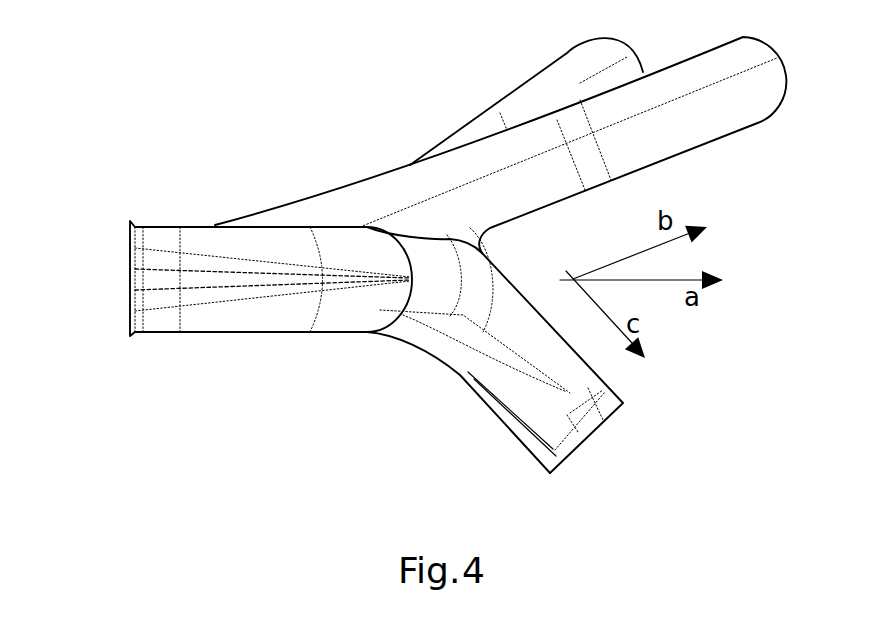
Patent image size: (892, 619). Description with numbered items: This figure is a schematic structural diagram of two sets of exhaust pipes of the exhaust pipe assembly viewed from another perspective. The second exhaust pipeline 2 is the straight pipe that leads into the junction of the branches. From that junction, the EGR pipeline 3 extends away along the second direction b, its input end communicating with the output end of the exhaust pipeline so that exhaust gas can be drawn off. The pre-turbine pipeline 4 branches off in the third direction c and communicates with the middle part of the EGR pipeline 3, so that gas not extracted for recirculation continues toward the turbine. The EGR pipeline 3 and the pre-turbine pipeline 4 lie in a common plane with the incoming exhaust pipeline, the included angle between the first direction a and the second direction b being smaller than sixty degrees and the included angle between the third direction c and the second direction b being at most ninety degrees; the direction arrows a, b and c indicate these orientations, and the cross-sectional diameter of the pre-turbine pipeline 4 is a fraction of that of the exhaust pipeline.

The second exhaust pipeline 2 is at (267, 265).
The EGR pipeline 3 is at (460, 177).
The pre-turbine pipeline 4 is at (515, 363).